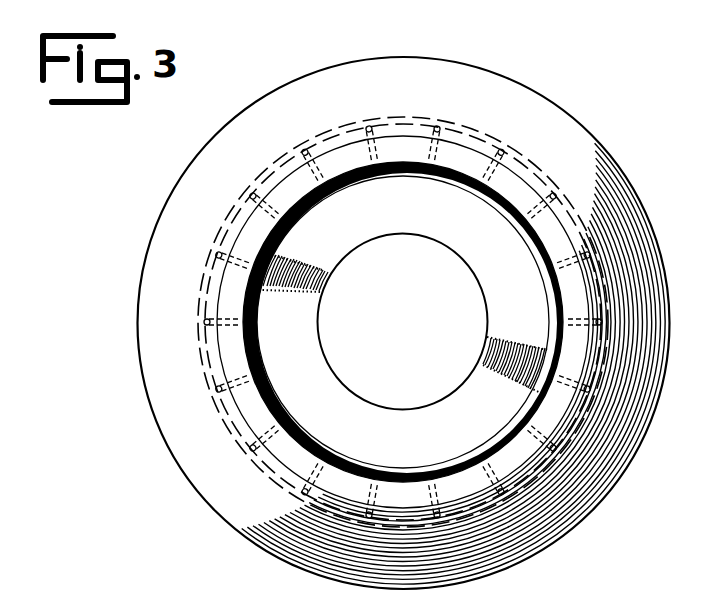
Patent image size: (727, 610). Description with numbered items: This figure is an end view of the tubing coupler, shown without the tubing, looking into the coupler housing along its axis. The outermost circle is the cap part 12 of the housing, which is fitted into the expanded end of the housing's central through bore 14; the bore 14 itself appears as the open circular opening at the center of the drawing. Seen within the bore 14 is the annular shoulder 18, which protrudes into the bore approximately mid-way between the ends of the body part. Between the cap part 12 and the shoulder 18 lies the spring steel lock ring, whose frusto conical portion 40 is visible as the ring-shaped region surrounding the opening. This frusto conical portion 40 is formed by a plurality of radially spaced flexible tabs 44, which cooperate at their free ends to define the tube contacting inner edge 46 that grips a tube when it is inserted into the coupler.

The cap part 12 is at (544, 104).
The central through bore 14 is at (405, 360).
The annular shoulder 18 is at (455, 240).
The frusto conical portion 40 is at (293, 153).
The flexible tabs 44 is at (418, 164).
The tube contacting inner edge 46 is at (478, 462).